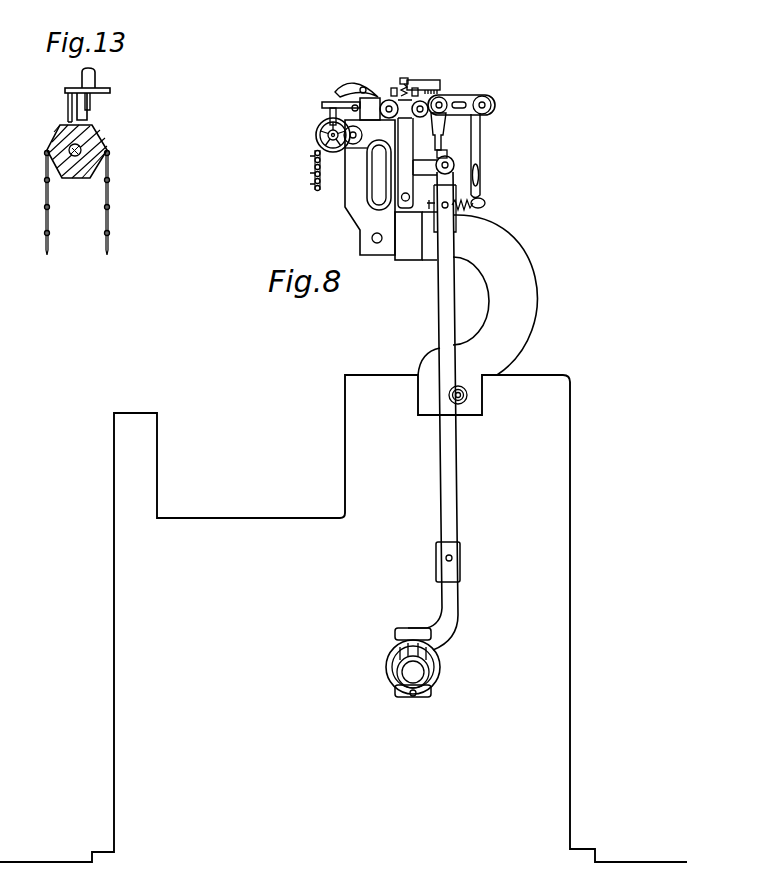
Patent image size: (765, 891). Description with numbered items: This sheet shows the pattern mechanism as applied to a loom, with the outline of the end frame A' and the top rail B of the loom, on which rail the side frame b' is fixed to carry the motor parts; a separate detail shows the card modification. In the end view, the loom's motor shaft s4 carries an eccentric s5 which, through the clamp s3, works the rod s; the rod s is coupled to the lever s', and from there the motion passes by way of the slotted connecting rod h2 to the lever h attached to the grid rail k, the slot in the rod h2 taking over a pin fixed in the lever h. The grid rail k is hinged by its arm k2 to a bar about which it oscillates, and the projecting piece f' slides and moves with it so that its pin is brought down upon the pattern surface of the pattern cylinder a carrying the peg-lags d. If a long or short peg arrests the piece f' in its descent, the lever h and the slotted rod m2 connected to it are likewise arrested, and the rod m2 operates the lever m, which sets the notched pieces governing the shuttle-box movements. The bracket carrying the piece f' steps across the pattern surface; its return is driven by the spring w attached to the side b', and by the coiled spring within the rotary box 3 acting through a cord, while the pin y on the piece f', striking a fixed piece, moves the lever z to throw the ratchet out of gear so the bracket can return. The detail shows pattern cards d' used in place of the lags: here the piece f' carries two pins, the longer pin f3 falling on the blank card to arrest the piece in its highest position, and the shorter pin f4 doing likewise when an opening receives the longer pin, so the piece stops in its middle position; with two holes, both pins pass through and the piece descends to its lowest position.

In FIG. 13, the projecting piece f' is at (96, 73).
In FIG. 8, the projecting piece f' is at (334, 87).
In FIG. 13, the longer pin f3 is at (67, 112).
In FIG. 13, the shorter pin f4 is at (88, 112).
In FIG. 13, the pin y is at (88, 102).
In FIG. 13, the pattern cylinder a is at (82, 175).
In FIG. 13, the pattern cards d' is at (109, 202).
In FIG. 8, the end frame A' is at (343, 618).
In FIG. 8, the top rail B is at (416, 236).
In FIG. 8, the rod s is at (431, 411).
In FIG. 8, the lever s' is at (433, 182).
In FIG. 8, the clamp s3 is at (407, 702).
In FIG. 8, the motor shaft s4 is at (412, 675).
In FIG. 8, the eccentric s5 is at (440, 667).
In FIG. 8, the lever h is at (462, 97).
In FIG. 8, the slotted connecting rod h2 is at (455, 133).
In FIG. 8, the slotted rod m2 is at (483, 133).
In FIG. 8, the lever m is at (483, 200).
In FIG. 8, the rotary box 3 is at (423, 80).
In FIG. 8, the grid rail k is at (367, 120).
In FIG. 8, the arm of grid rail k2 is at (366, 109).
In FIG. 8, the lever z is at (352, 83).
In FIG. 8, the peg-lags d is at (312, 156).
In FIG. 8, the side frame b' is at (355, 188).
In FIG. 8, the spring w is at (402, 156).